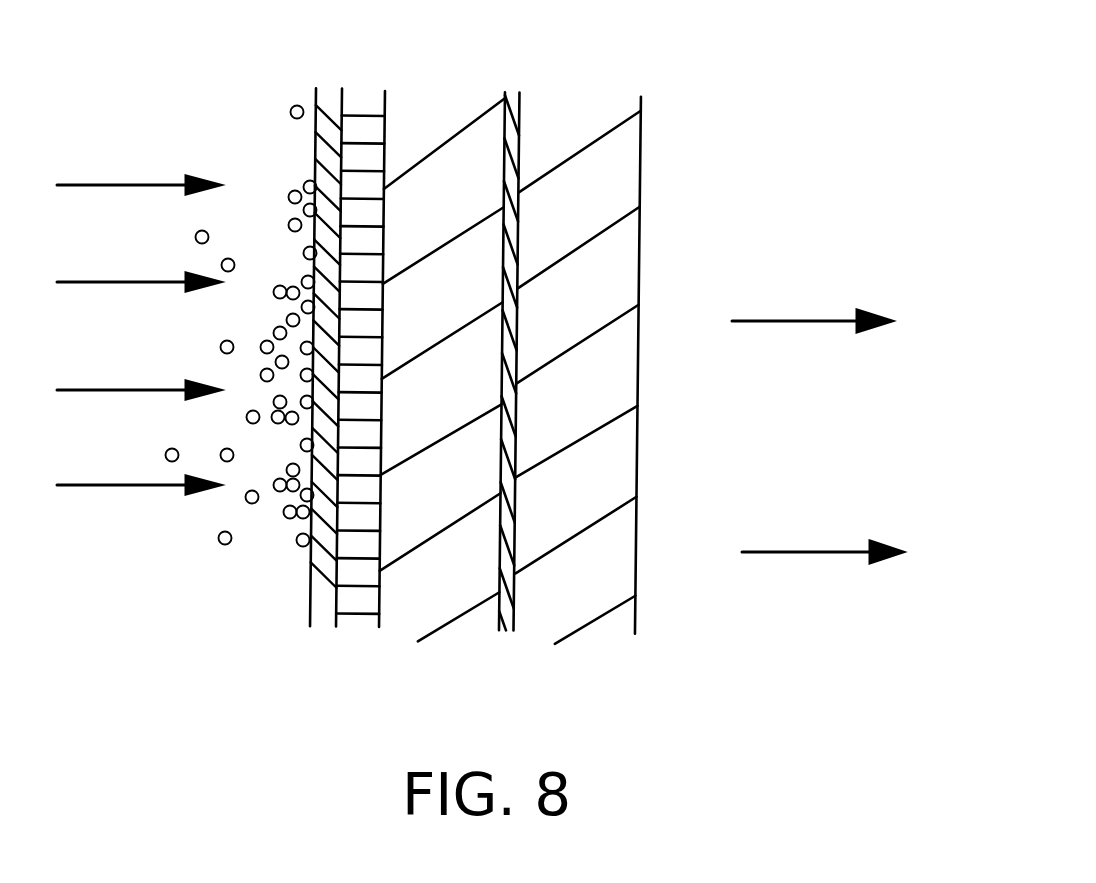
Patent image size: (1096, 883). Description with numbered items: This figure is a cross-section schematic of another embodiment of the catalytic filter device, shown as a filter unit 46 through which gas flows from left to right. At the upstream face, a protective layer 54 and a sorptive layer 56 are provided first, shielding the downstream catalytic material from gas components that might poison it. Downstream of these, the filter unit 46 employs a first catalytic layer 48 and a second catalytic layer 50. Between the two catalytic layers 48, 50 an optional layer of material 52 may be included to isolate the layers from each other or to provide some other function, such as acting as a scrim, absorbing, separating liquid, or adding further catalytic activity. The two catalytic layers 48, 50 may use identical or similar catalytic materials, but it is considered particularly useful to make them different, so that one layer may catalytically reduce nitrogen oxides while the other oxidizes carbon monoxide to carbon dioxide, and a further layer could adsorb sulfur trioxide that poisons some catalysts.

The filter unit 46 is at (561, 92).
The first catalytic layer 48 is at (428, 597).
The second catalytic layer 50 is at (577, 597).
The layer of material 52 is at (505, 622).
The protective layer 54 is at (320, 582).
The sorptive layer 56 is at (357, 602).